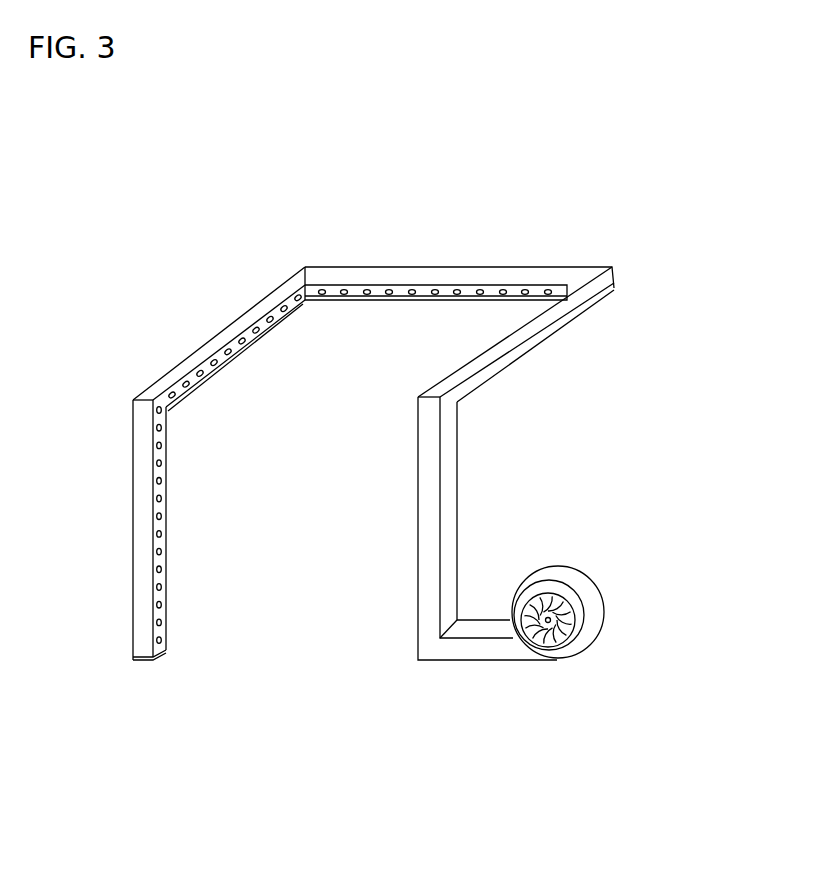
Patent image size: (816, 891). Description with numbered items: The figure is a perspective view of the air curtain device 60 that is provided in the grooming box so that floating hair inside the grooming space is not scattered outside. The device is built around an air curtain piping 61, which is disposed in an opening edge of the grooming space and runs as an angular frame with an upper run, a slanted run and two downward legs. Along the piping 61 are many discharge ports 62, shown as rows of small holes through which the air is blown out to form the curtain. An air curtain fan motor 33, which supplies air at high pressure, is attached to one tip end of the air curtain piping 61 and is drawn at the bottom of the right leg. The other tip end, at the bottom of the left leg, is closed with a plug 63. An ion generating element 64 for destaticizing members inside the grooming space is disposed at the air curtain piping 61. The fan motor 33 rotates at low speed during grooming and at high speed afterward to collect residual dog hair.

The air curtain device 60 is at (493, 267).
The air curtain piping 61 is at (248, 332).
The discharge ports 62 is at (365, 295).
The plug 63 is at (145, 662).
The ion generating element 64 is at (168, 550).
The air curtain fan motor 33 is at (580, 572).